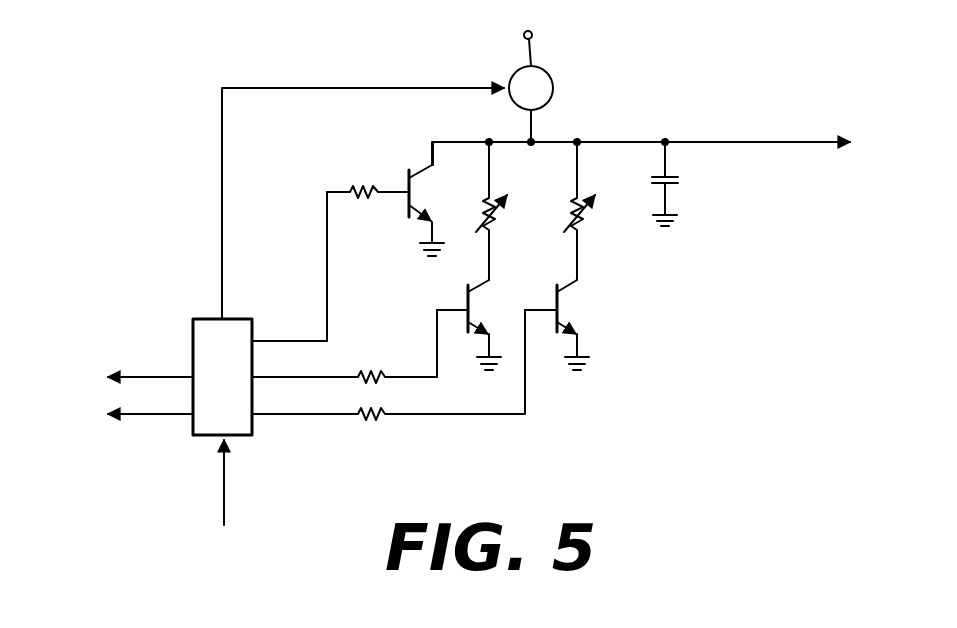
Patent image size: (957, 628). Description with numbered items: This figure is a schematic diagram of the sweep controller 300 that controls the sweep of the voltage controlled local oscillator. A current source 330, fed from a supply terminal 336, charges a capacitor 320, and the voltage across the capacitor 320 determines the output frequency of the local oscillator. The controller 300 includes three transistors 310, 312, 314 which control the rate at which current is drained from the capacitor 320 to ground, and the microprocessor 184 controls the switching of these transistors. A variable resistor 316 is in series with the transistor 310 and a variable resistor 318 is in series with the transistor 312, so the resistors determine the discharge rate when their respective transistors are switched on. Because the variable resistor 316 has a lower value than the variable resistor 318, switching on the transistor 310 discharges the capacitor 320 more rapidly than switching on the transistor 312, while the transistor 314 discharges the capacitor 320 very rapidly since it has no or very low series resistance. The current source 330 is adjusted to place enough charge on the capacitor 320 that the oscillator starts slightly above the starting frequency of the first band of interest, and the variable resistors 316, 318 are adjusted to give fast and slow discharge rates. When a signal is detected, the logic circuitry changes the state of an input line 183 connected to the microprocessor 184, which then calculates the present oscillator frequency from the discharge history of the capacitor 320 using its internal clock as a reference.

The controller 300 is at (652, 52).
The supply voltage terminal 336 is at (532, 35).
The current source 330 is at (552, 80).
The transistor 314 is at (403, 214).
The variable resistor 318 is at (498, 220).
The variable resistor 316 is at (586, 220).
The transistor 312 is at (476, 300).
The transistor 310 is at (565, 300).
The capacitor 320 is at (682, 183).
The microprocessor 184 is at (193, 428).
The input line 183 is at (225, 488).